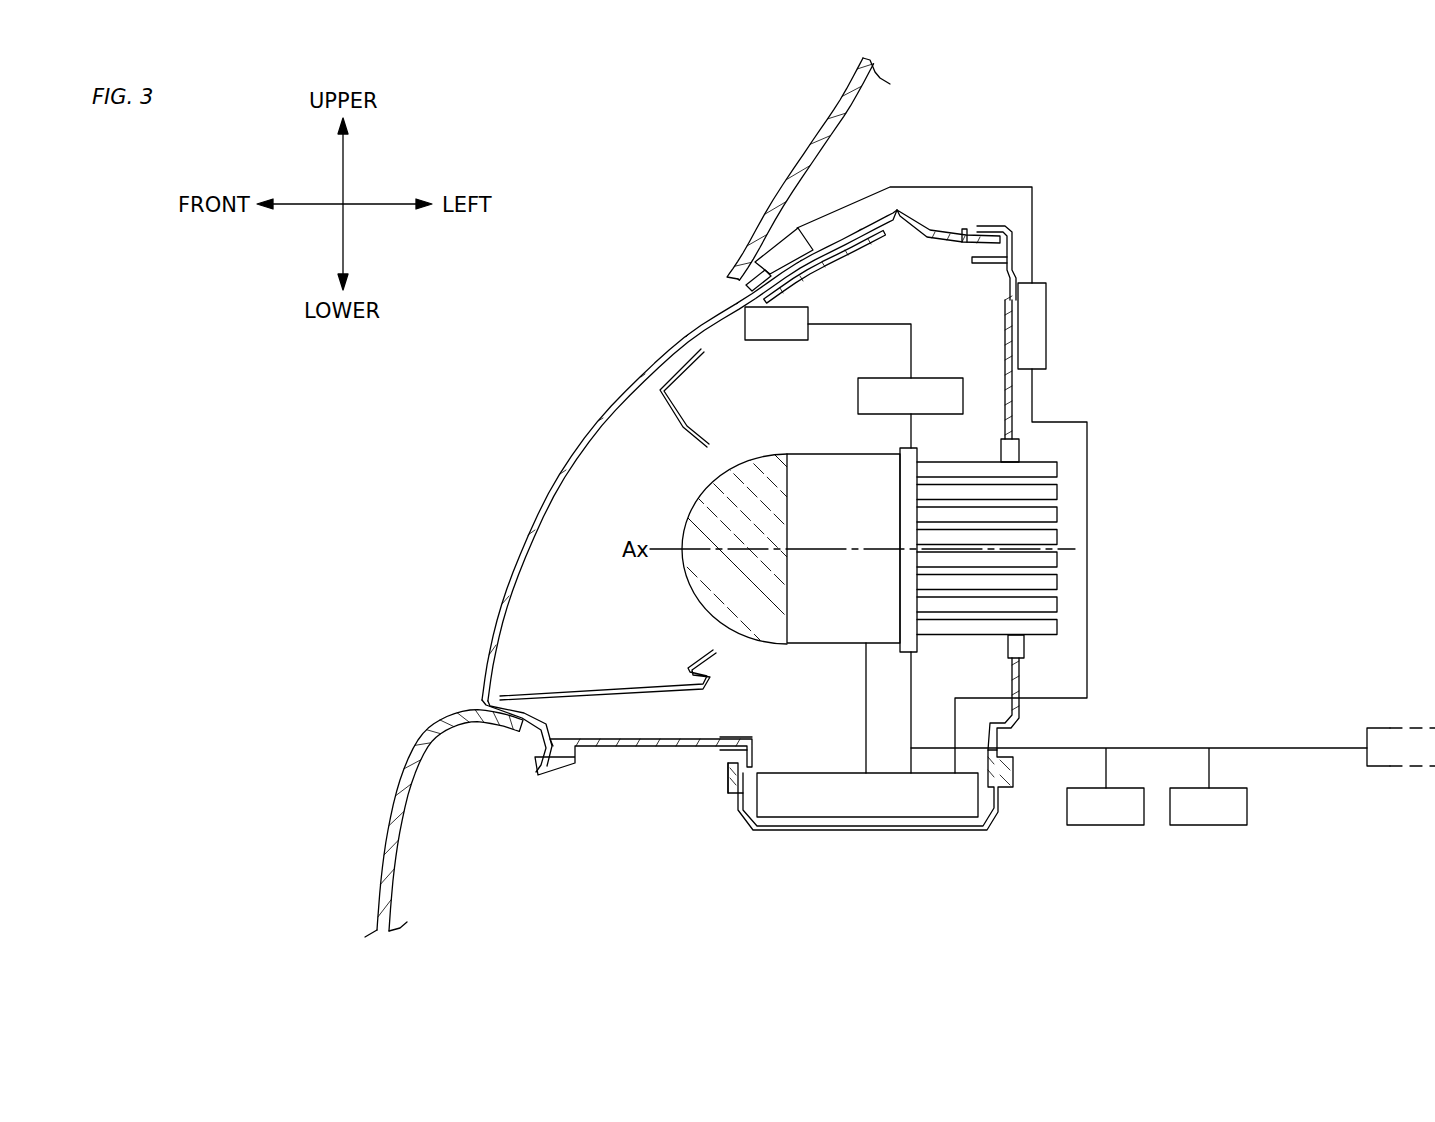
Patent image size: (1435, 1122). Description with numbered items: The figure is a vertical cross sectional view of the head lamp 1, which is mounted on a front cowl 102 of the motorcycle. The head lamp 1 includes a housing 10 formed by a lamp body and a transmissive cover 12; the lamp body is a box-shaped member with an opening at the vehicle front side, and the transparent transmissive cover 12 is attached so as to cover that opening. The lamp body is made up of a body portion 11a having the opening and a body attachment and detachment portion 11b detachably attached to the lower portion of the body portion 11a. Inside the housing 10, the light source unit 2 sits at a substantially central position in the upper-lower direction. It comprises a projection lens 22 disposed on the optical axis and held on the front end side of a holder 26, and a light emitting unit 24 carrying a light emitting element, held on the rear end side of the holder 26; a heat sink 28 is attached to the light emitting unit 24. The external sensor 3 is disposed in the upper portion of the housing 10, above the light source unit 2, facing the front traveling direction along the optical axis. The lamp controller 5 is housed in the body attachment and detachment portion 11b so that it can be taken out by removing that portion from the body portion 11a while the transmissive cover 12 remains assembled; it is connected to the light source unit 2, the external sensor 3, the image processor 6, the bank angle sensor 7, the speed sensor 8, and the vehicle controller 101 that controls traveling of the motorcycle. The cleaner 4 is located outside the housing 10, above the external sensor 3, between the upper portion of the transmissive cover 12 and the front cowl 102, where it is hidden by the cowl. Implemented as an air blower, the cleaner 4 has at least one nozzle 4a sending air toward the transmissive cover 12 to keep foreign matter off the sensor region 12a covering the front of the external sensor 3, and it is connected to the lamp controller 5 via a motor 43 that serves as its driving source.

The head lamp 1 is at (1128, 184).
The light source unit 2 is at (675, 538).
The external sensor 3 is at (810, 320).
The cleaner 4 is at (790, 232).
The nozzle 4a is at (740, 273).
The lamp controller 5 is at (818, 773).
The image processor 6 is at (945, 380).
The bank angle sensor 7 is at (1108, 826).
The speed sensor 8 is at (1208, 826).
The housing 10 is at (618, 378).
The body portion 11a is at (1018, 405).
The body attachment and detachment portion 11b is at (905, 834).
The transmissive cover 12 is at (590, 428).
The sensor region 12a is at (742, 292).
The projection lens 22 is at (715, 500).
The light emitting unit 24 is at (905, 445).
The holder 26 is at (822, 475).
The heat sink 28 is at (978, 468).
The motor 43 is at (1038, 320).
The vehicle controller 101 is at (1411, 728).
The front cowl 102 is at (773, 160).